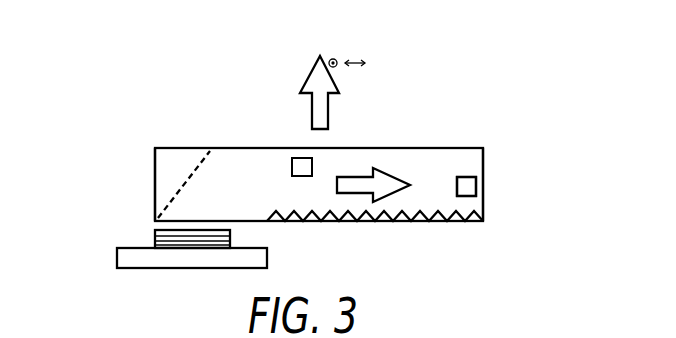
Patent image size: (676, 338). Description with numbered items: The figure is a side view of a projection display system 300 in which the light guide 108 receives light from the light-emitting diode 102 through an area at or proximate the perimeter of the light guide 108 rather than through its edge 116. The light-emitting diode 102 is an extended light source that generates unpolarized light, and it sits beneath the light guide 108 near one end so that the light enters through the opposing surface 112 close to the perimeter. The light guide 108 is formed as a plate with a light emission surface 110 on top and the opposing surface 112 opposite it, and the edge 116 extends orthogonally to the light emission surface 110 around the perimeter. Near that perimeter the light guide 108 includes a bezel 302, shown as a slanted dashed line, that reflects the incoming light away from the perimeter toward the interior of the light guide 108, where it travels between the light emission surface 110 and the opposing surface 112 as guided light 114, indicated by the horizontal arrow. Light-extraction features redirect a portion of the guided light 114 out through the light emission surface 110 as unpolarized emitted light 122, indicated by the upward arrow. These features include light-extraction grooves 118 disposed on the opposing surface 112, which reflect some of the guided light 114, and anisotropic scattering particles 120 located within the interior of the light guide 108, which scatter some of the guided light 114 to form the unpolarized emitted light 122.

The projection display system 300 is at (144, 46).
The bezel 302 is at (185, 182).
The light emission surface 110 is at (473, 148).
The unpolarized emitted light 122 is at (311, 73).
The guided light 114 is at (362, 176).
The light-extraction grooves 118 is at (340, 222).
The light guide 108 is at (477, 188).
The anisotropic scattering particles 120 is at (463, 183).
The opposing surface 112 is at (470, 221).
The edge 116 is at (155, 182).
The light-emitting diode 102 is at (155, 237).